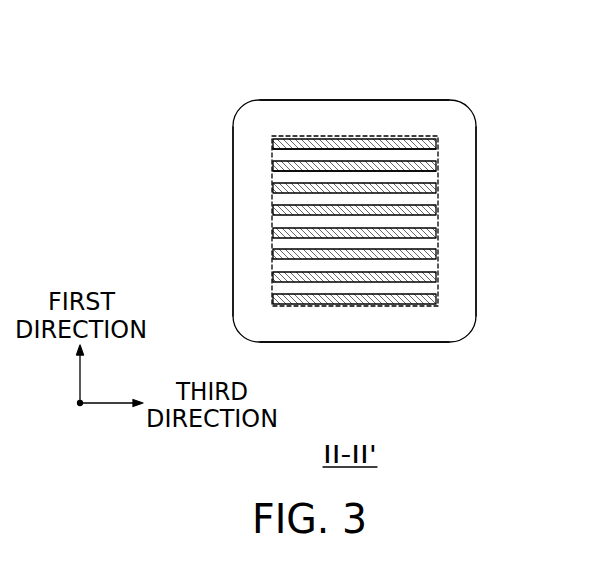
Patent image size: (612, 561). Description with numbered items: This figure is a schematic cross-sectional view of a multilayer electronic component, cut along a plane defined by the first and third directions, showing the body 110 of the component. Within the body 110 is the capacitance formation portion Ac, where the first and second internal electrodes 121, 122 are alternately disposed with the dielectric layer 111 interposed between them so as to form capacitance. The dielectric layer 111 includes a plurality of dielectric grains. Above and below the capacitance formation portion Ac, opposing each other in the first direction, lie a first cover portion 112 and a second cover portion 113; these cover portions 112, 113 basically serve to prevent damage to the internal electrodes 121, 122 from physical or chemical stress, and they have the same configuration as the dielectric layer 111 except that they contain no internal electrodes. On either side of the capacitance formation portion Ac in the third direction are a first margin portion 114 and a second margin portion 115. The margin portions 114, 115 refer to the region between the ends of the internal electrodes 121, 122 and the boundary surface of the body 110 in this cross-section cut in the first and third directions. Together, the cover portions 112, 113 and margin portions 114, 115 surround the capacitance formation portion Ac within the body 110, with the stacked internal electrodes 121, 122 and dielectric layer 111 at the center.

The body 110 is at (340, 100).
The dielectric layer 111 is at (430, 177).
The first cover portion 112 is at (292, 112).
The second cover portion 113 is at (322, 342).
The first margin portion 114 is at (239, 255).
The second margin portion 115 is at (468, 250).
The first internal electrode 121 is at (388, 140).
The second internal electrode 122 is at (407, 167).
The capacitance formation portion Ac is at (273, 221).